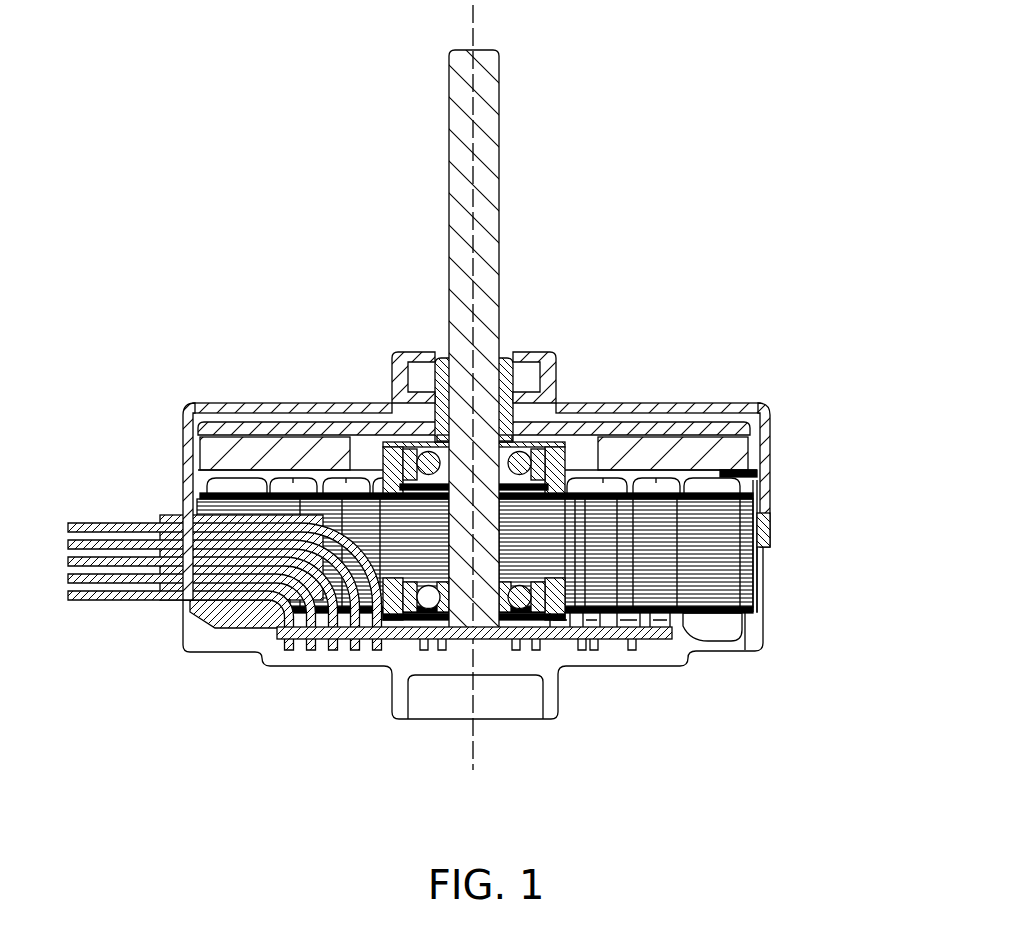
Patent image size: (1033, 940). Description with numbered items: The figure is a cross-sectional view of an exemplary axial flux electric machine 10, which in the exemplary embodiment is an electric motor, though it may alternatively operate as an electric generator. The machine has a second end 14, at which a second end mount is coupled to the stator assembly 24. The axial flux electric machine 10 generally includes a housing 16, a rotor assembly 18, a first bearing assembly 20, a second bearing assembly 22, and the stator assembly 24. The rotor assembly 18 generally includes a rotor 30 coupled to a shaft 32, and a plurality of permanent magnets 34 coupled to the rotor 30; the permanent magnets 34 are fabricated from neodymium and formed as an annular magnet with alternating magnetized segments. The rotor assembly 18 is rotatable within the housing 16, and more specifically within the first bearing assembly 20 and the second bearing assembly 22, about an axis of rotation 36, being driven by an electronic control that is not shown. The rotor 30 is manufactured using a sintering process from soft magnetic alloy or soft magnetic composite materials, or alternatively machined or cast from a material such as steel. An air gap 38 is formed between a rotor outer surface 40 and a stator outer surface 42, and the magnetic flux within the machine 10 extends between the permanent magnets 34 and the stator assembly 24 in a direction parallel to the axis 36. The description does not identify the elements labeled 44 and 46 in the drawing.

The axial flux electric machine 10 is at (462, 396).
The second end 14 is at (705, 712).
The housing 16 is at (182, 433).
The rotor assembly 18 is at (720, 418).
The first bearing assembly 20 is at (520, 462).
The second bearing assembly 22 is at (533, 626).
The stator assembly 24 is at (762, 563).
The rotor 30 is at (340, 420).
The shaft 32 is at (500, 128).
The permanent magnets 34 is at (212, 453).
The axis of rotation 36 is at (283, 318).
The air gap 38 is at (757, 472).
The rotor outer surface 40 is at (262, 468).
The stator outer surface 42 is at (208, 480).
The back iron ring 44 is at (752, 426).
The hub 46 is at (490, 366).